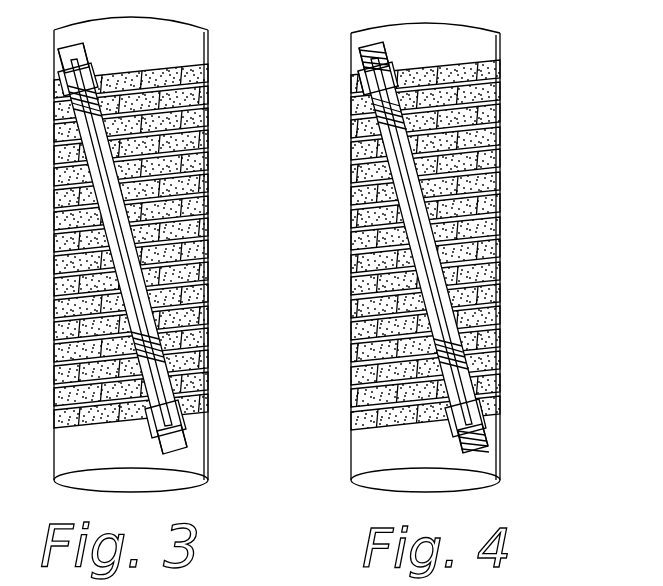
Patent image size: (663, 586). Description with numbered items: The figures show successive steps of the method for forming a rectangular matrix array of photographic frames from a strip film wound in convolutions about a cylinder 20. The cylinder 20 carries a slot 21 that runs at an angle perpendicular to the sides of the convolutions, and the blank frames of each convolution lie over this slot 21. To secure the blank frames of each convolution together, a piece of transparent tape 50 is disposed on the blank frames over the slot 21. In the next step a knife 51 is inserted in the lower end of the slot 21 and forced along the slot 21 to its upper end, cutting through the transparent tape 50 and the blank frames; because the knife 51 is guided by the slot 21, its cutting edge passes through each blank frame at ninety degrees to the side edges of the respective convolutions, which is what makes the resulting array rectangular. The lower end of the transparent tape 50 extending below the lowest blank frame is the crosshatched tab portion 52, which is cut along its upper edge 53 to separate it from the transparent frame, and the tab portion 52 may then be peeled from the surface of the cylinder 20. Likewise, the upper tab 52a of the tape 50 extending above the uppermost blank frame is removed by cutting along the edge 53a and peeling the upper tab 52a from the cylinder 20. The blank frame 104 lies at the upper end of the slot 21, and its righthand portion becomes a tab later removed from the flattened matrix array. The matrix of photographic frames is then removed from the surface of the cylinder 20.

In FIG. 3, the cylinder 20 is at (193, 486).
In FIG. 4, the cylinder 20 is at (473, 487).
In FIG. 3, the slot 21 is at (165, 440).
In FIG. 4, the slot 21 is at (458, 440).
In FIG. 3, the transparent tape 50 is at (200, 460).
In FIG. 4, the transparent tape 50 is at (405, 222).
In FIG. 4, the knife 51 is at (492, 387).
In FIG. 4, the tab portion 52 is at (497, 468).
In FIG. 4, the upper tab 52a is at (388, 50).
In FIG. 4, the upper edge 53 is at (497, 435).
In FIG. 4, the edge 53a is at (365, 71).
In FIG. 4, the blank frame 104 is at (410, 71).